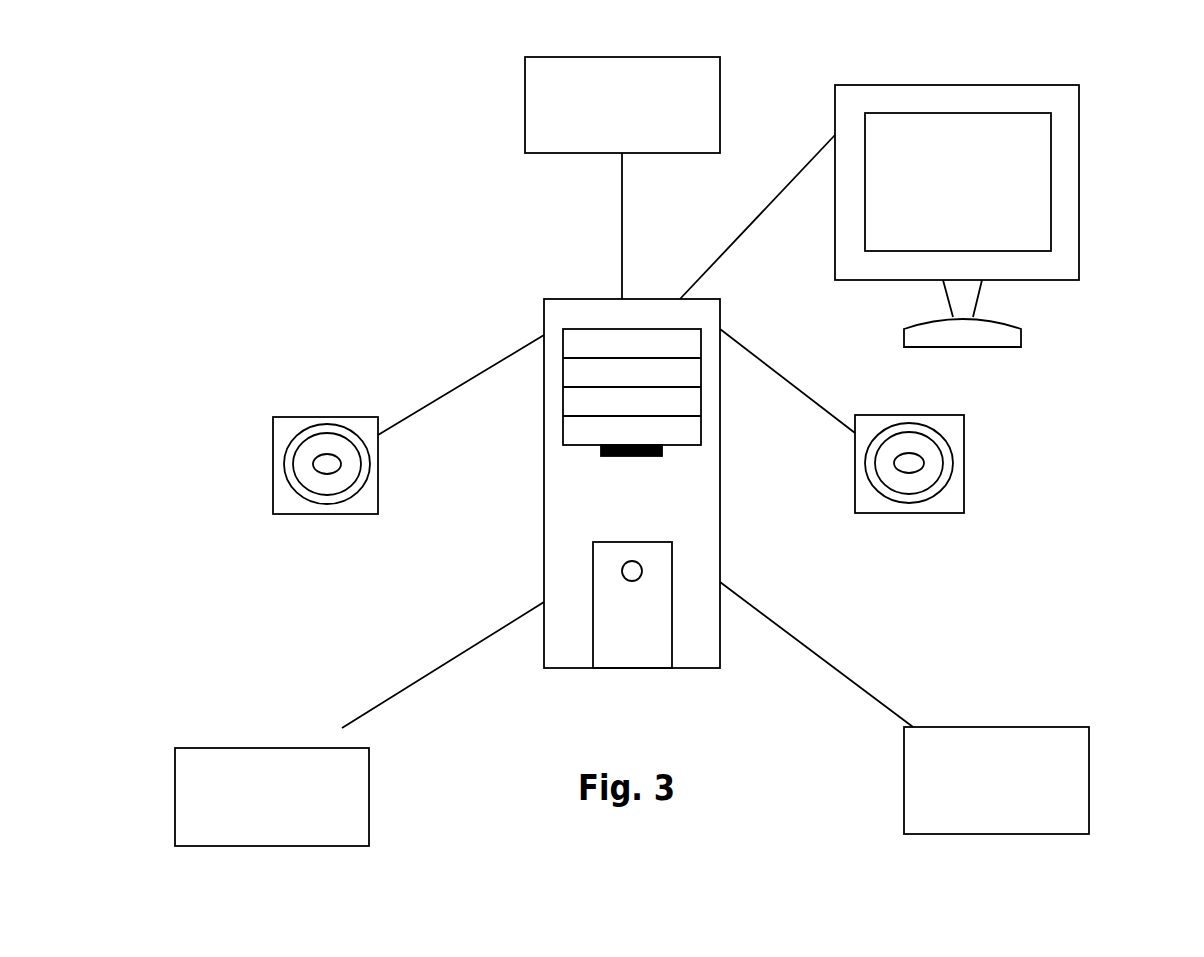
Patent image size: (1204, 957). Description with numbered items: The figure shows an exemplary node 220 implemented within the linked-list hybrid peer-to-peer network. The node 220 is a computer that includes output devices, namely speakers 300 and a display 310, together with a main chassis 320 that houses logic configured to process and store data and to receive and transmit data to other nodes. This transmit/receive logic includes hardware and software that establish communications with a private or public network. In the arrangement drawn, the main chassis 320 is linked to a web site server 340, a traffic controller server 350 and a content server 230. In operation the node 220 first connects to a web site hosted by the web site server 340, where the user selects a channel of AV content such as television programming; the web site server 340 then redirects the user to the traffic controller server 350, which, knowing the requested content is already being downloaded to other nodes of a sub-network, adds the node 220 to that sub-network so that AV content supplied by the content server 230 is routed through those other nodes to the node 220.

The web site server 340 is at (622, 105).
The main chassis 320 is at (610, 497).
The display 310 is at (1082, 157).
The speakers 300 is at (325, 517).
The traffic controller server 350 is at (272, 797).
The content server 230 is at (996, 780).
The node 220 is at (505, 243).